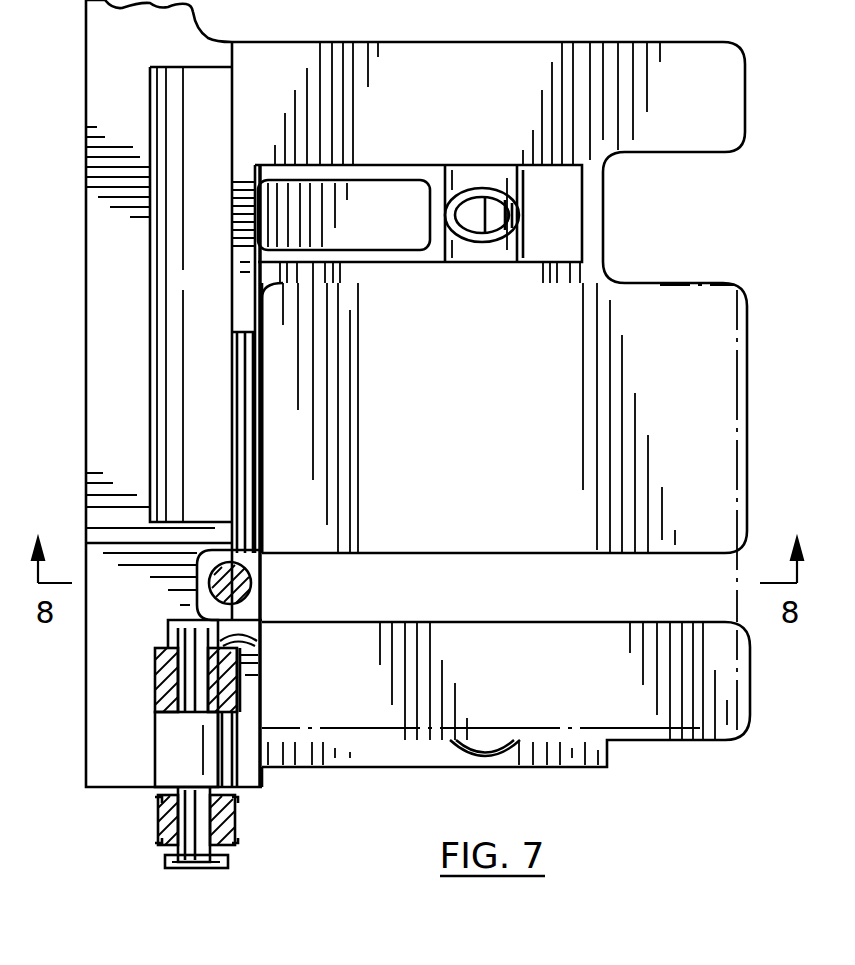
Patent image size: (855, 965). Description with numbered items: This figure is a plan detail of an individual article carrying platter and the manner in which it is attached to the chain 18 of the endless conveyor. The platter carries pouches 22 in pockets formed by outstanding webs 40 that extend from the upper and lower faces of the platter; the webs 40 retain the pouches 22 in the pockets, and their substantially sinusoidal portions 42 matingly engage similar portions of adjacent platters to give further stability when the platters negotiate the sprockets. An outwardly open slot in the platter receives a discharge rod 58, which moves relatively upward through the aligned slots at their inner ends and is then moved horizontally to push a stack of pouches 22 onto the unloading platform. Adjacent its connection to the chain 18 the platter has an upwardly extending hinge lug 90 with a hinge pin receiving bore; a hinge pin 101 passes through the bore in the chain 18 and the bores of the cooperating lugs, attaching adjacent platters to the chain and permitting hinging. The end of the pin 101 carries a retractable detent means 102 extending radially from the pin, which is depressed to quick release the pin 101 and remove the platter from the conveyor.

The pouches 22 is at (460, 594).
The outstanding webs 40 is at (388, 166).
The substantially sinusoidal portions 42 is at (483, 170).
The discharge rods 58 is at (255, 585).
The upwardly extending hinge lug 90 is at (165, 757).
The retractable detent means 102 is at (262, 636).
The chain 18 is at (238, 826).
The hinge pin 101 is at (190, 862).